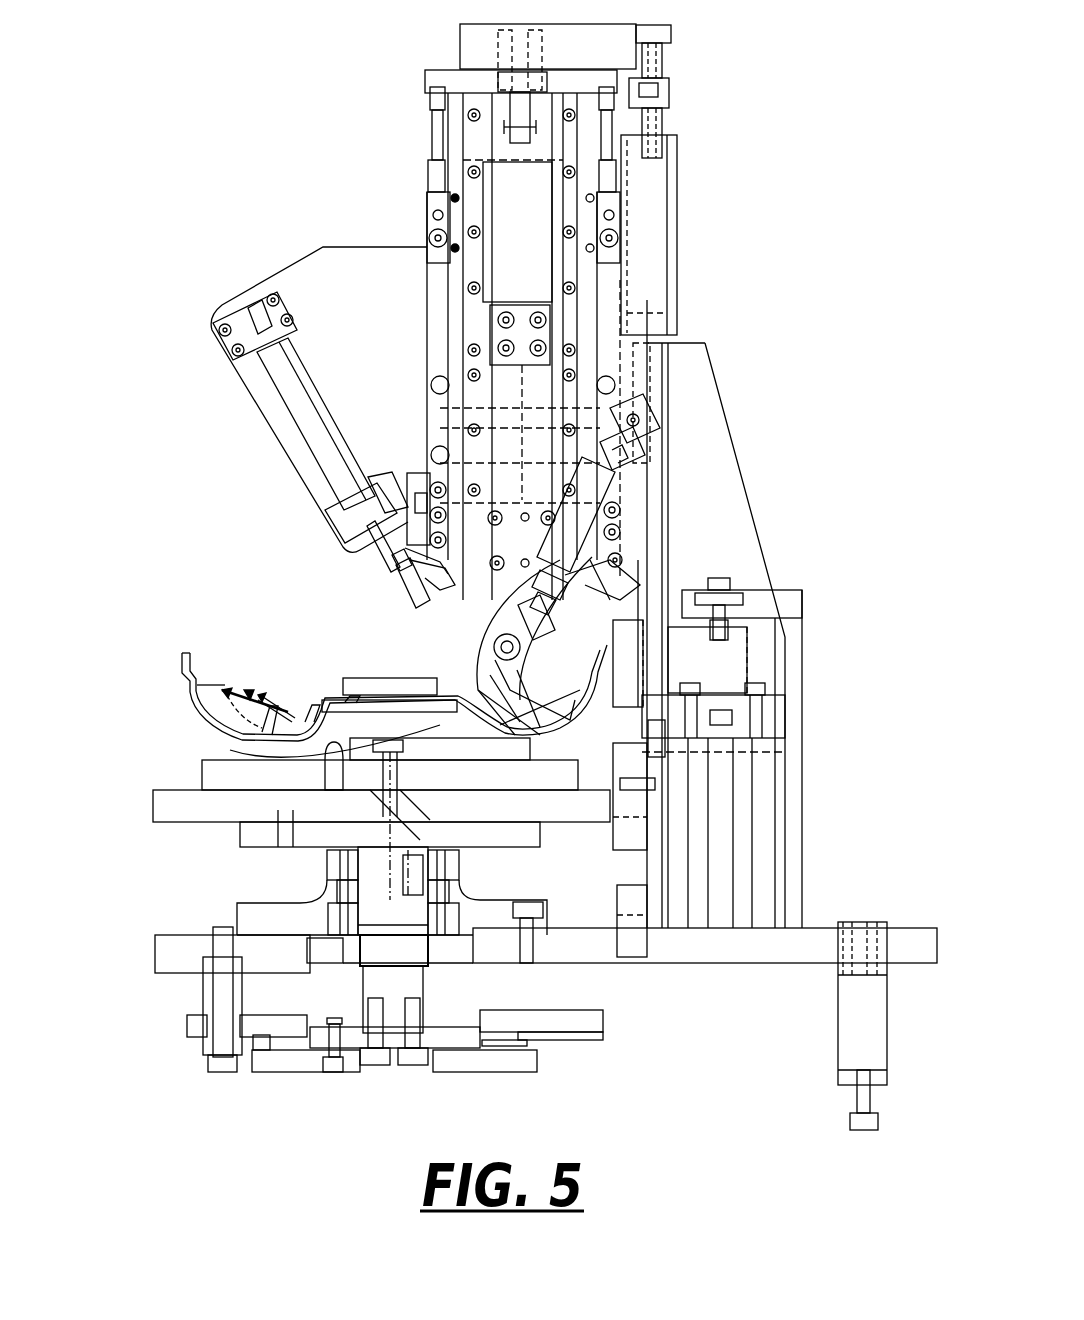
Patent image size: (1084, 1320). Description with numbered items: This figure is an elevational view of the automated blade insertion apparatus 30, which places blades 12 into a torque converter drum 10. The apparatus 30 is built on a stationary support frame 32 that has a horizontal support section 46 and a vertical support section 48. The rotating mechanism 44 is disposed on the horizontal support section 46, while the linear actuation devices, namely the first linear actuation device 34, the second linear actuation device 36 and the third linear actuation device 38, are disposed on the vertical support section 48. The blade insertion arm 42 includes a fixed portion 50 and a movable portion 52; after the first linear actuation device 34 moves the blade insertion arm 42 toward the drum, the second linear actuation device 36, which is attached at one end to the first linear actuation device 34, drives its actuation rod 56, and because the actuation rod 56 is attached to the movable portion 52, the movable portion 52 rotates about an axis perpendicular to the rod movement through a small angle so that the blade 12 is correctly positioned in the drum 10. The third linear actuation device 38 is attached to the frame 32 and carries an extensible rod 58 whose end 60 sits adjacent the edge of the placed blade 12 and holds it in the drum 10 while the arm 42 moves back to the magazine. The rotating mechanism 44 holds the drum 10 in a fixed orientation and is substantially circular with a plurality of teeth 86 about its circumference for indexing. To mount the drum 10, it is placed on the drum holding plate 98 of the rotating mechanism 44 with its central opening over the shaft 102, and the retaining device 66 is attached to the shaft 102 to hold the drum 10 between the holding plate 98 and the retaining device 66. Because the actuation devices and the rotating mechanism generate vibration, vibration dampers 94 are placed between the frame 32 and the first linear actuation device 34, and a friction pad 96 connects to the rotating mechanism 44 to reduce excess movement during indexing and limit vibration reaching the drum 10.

The torque converter drum 10 is at (190, 683).
The blade 12 is at (210, 703).
The automated blade insertion apparatus 30 is at (792, 355).
The stationary support frame 32 is at (725, 947).
The first linear actuation device 34 is at (528, 243).
The second linear actuation device 36 is at (590, 492).
The third linear actuation device 38 is at (310, 418).
The blade insertion arm 42 is at (493, 594).
The rotating mechanism 44 is at (180, 805).
The horizontal support section 46 is at (172, 948).
The vertical support section 48 is at (737, 447).
The fixed portion 50 is at (560, 593).
The movable portion 52 is at (487, 683).
The actuation rod 56 is at (535, 618).
The extensible rod 58 is at (390, 548).
The end of the rod 60 is at (427, 607).
The retaining device 66 is at (390, 682).
The teeth 86 is at (372, 792).
The vibration dampers 94 is at (607, 140).
The friction pad 96 is at (537, 1042).
The drum holding plate 98 is at (330, 728).
The shaft 102 is at (230, 750).